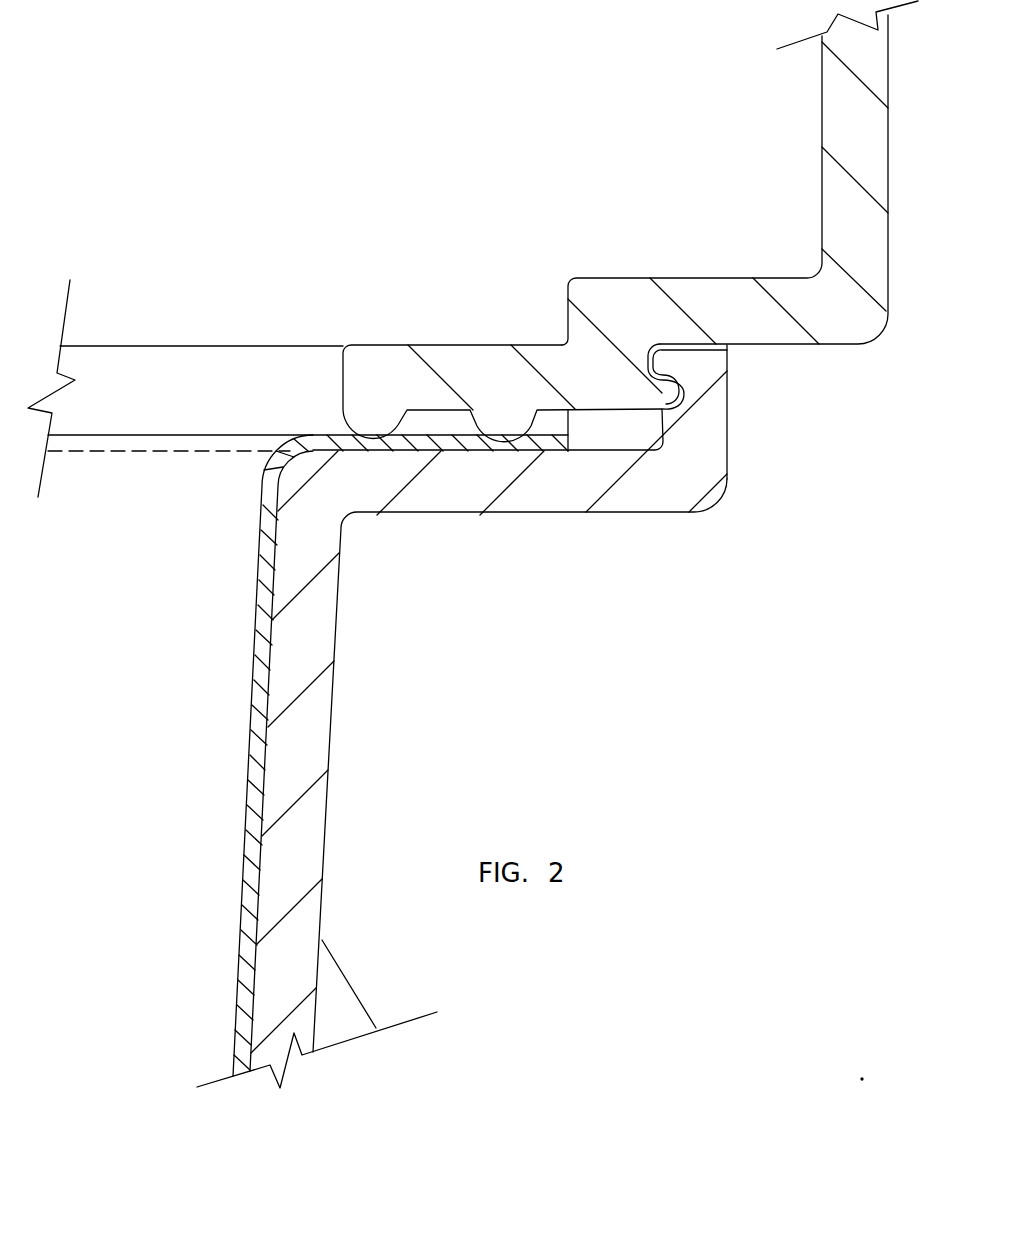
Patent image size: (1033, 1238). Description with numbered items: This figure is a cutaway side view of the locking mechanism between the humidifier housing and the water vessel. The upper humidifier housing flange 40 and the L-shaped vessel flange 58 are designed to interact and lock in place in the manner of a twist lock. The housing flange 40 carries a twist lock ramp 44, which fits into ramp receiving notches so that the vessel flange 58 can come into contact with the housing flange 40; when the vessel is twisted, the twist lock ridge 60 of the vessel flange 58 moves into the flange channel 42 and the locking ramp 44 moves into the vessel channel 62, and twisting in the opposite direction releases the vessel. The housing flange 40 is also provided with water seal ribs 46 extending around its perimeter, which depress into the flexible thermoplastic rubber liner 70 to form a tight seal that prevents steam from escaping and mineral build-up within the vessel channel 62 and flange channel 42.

The humidifier housing flange 40 is at (712, 305).
The flange channel 42 is at (652, 352).
The twist lock ramp 44 is at (660, 395).
The water seal ribs 46 is at (385, 440).
The vessel flange 58 is at (547, 500).
The twist lock ridge 60 is at (663, 358).
The vessel channel 62 is at (682, 392).
The liner 70 is at (247, 797).